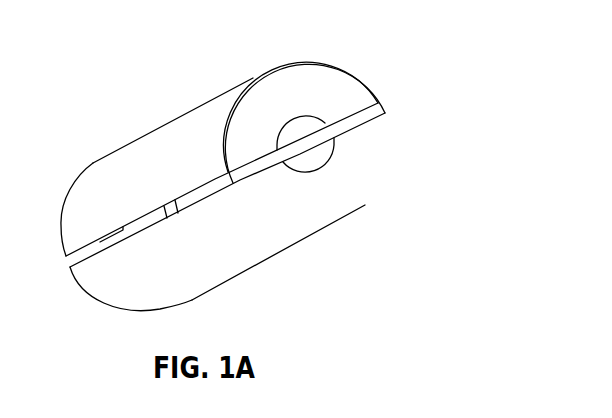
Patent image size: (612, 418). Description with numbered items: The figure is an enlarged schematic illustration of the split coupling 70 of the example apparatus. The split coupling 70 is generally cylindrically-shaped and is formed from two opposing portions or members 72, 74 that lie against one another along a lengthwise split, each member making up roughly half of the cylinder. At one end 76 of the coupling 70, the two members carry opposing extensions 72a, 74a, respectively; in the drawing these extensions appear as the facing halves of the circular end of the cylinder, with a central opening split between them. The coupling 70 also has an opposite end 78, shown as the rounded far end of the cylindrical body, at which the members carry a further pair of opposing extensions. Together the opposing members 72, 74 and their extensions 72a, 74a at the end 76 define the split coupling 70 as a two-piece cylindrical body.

The split coupling 70 is at (421, 47).
The opposing portion or member 72 is at (197, 108).
The opposing extension 72a is at (282, 78).
The opposing portion or member 74 is at (280, 252).
The opposing extension 74a is at (375, 150).
The end of the coupling 76 is at (360, 207).
The opposite end of the coupling 78 is at (188, 302).